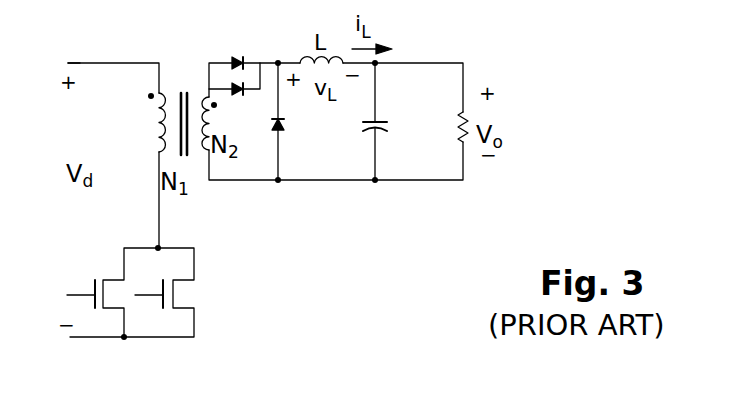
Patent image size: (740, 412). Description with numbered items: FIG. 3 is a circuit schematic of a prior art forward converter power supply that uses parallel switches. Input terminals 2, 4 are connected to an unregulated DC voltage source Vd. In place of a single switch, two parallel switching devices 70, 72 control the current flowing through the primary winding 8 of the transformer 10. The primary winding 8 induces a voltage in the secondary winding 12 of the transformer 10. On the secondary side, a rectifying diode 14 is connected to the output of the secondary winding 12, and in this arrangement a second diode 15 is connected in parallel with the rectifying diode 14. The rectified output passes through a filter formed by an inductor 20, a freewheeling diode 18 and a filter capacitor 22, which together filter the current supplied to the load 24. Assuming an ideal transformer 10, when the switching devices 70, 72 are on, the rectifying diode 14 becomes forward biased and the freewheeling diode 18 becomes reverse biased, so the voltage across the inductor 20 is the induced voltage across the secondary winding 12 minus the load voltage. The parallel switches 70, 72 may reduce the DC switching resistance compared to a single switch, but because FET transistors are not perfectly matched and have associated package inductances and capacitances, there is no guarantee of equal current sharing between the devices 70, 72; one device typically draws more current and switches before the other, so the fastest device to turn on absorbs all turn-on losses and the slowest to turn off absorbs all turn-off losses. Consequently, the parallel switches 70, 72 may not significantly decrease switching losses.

The input terminal 2 is at (80, 62).
The input terminal 4 is at (86, 339).
The primary winding 8 is at (156, 123).
The transformer 10 is at (175, 85).
The secondary winding 12 is at (205, 94).
The rectifying diode 14 is at (245, 60).
The parallel diode 15 is at (232, 96).
The freewheeling diode 18 is at (285, 119).
The inductor 20 is at (305, 58).
The filter capacitor 22 is at (388, 121).
The load 24 is at (470, 112).
The parallel switching device 70 is at (95, 280).
The parallel switching device 72 is at (175, 284).